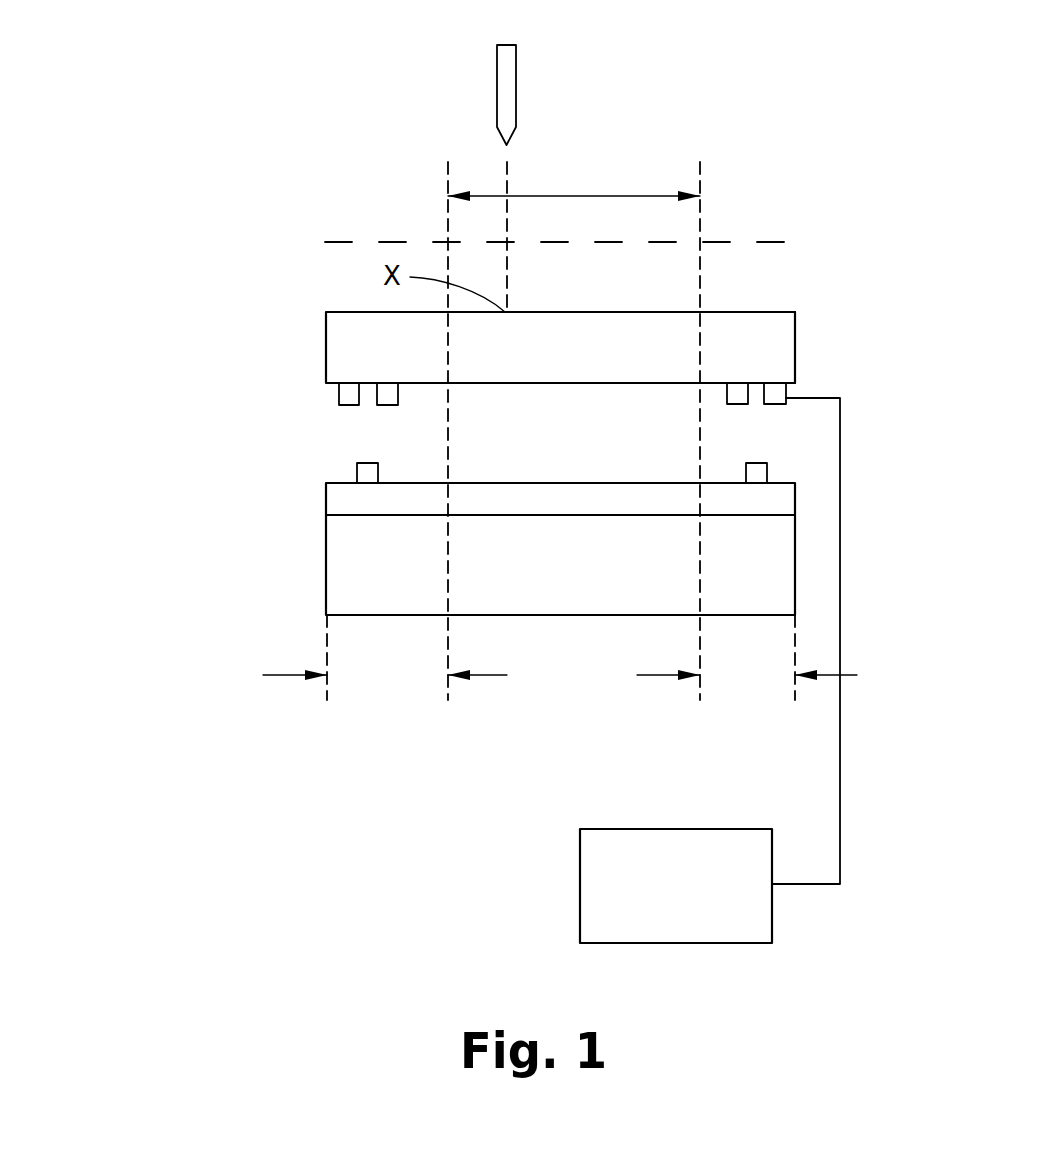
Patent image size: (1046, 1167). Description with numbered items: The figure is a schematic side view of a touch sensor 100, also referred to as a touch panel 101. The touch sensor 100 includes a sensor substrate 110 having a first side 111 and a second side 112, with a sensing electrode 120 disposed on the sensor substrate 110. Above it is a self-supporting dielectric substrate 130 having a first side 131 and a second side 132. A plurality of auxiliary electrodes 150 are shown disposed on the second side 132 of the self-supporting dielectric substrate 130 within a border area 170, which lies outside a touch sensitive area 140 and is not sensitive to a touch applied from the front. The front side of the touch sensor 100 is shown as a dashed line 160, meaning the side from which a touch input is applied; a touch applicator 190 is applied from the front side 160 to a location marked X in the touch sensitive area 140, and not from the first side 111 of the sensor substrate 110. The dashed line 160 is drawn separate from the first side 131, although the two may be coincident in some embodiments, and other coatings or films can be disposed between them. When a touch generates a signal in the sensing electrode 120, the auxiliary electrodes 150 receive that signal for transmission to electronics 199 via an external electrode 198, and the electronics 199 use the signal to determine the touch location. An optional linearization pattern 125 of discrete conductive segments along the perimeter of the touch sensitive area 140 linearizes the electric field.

The touch sensor 100 is at (108, 118).
The touch panel 101 is at (145, 318).
The sensor substrate 110 is at (326, 563).
The first side of sensor substrate 111 is at (538, 615).
The second side of sensor substrate 112 is at (610, 515).
The sensing electrode 120 is at (326, 497).
The linearization pattern 125 is at (357, 475).
The self-supporting dielectric substrate 130 is at (326, 350).
The first side of self-supporting dielectric substrate 131 is at (768, 312).
The second side of self-supporting dielectric substrate 132 is at (663, 383).
The touch sensitive area 140 is at (608, 196).
The auxiliary electrodes 150 is at (377, 405).
The front side 160 is at (343, 240).
The border area 170 is at (285, 677).
The touch applicator 190 is at (497, 78).
The external electrode 198 is at (840, 775).
The electronics 199 is at (580, 875).